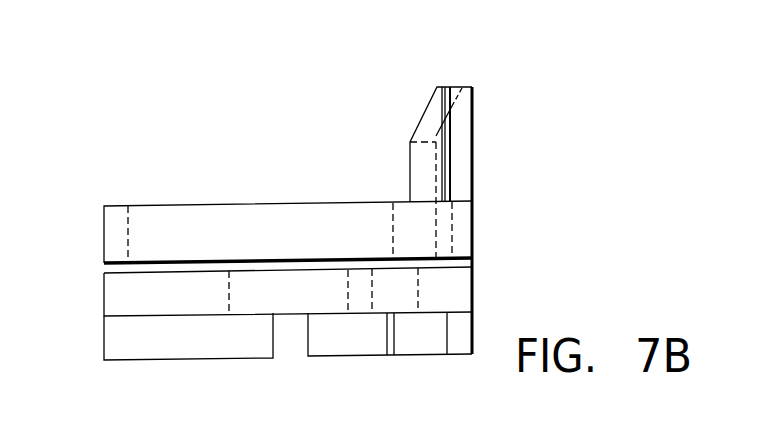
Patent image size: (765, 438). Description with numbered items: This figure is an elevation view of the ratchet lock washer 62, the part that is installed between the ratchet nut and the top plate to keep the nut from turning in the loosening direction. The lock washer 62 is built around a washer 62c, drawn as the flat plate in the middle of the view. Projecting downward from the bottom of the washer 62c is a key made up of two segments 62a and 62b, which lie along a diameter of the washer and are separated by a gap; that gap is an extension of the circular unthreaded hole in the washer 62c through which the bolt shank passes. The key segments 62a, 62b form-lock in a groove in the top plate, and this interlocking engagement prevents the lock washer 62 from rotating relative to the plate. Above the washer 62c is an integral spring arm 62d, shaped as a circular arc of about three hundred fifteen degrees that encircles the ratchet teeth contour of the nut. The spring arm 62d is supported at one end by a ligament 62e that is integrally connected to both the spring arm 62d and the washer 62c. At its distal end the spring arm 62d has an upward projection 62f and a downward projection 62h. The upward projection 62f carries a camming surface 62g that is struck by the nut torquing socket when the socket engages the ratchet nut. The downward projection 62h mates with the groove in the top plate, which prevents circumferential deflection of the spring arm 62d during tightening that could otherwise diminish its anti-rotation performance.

The ratchet lock washer 62 is at (307, 204).
The key segment 62a is at (162, 352).
The key segment 62b is at (345, 348).
The washer 62c is at (113, 293).
The spring arm 62d is at (190, 213).
The ligament 62e is at (472, 262).
The upward projection 62f is at (474, 137).
The camming surface 62g is at (426, 110).
The downward projection 62h is at (466, 328).